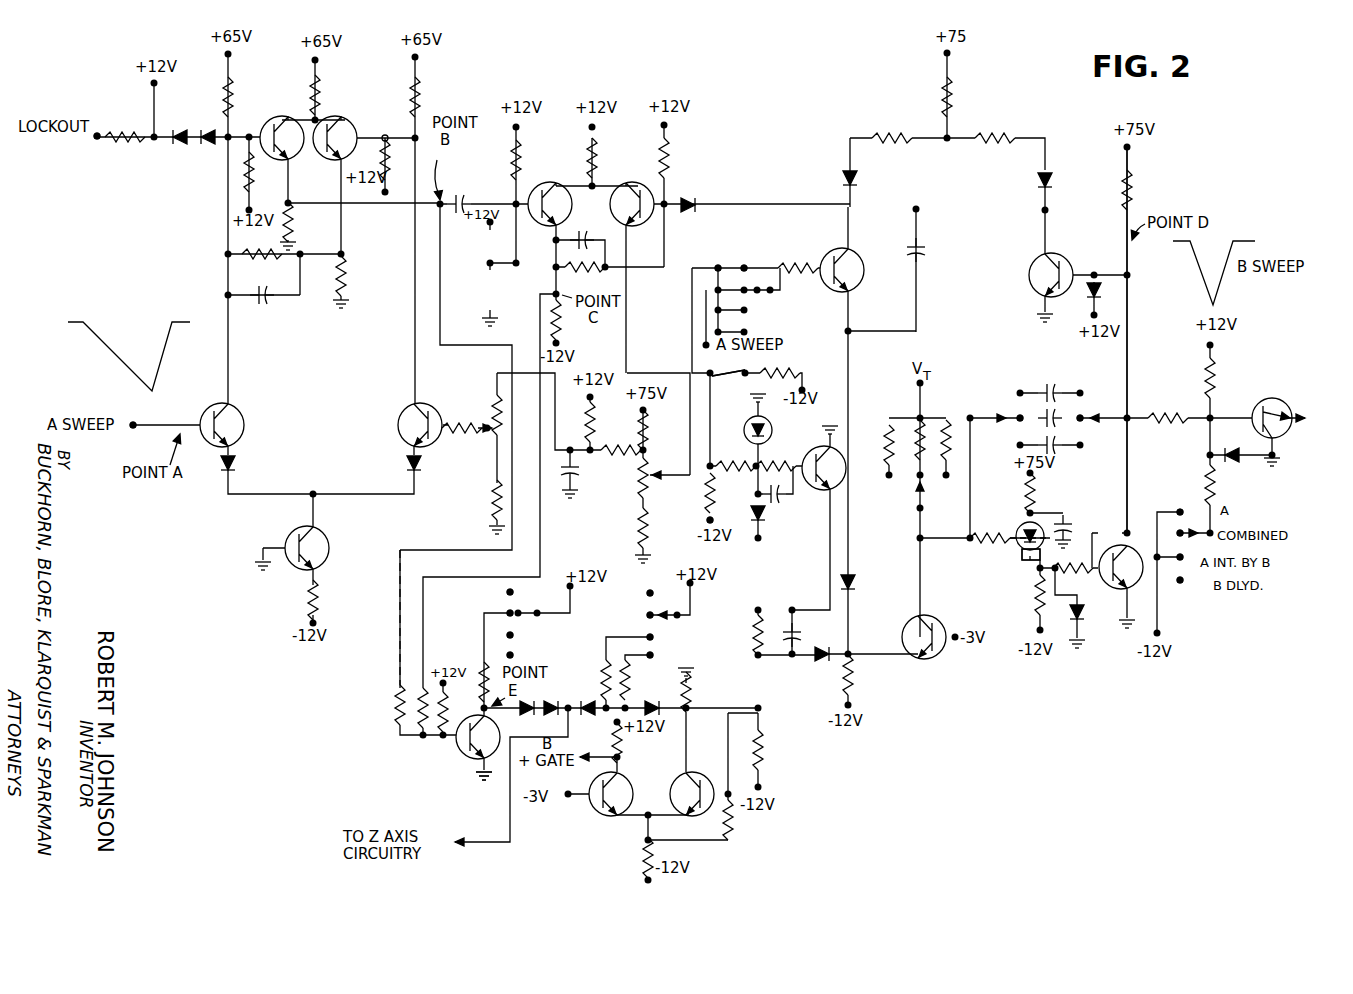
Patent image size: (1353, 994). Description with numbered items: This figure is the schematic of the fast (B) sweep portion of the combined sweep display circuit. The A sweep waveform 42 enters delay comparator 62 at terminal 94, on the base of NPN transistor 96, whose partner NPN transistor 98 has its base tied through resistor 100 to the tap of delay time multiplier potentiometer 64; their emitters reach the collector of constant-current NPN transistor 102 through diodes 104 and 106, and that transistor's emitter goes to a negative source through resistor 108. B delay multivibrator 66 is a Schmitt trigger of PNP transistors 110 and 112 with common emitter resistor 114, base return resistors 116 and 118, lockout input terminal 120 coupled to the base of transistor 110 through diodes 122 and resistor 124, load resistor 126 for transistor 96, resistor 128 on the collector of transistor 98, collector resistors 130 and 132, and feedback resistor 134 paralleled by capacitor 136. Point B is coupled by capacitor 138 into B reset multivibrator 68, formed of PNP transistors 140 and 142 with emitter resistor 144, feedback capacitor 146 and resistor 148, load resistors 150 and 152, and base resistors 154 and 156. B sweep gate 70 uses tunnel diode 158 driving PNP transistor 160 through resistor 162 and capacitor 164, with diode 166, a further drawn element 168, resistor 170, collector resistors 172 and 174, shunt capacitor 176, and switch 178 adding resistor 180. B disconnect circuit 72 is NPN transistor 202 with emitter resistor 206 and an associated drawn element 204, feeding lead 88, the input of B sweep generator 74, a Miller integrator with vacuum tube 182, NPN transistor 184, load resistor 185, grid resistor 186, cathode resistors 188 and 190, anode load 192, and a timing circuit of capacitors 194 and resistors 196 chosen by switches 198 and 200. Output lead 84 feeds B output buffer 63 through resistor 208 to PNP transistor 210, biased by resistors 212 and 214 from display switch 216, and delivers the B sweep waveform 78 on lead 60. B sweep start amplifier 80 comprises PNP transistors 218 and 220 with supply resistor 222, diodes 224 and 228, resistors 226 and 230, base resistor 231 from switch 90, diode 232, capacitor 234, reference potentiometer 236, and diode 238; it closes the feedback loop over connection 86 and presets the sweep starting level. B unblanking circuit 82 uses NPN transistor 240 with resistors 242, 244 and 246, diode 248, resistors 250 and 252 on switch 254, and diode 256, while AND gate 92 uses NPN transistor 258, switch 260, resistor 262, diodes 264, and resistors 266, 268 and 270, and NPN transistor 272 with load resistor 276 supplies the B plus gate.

The A sweep waveform 42 is at (109, 338).
The output lead 60 is at (1300, 428).
The delay comparator 62 is at (318, 464).
The B output buffer 63 is at (1290, 391).
The delay time multiplier potentiometer 64 is at (488, 450).
The B delay multivibrator 66 is at (324, 182).
The B reset multivibrator 68 is at (606, 206).
The B sweep gate 70 is at (811, 436).
The B disconnect circuit 72 is at (890, 620).
The B sweep generator 74 is at (1116, 513).
The B sweep waveform 78 is at (1205, 248).
The B sweep start amplifier 80 is at (962, 310).
The B unblanking circuit 82 is at (663, 801).
The output lead 84 is at (1130, 344).
The connection 86 is at (851, 405).
The lead 88 is at (923, 585).
The switch 90 is at (757, 283).
The AND gate 92 is at (437, 771).
The terminal 94 is at (131, 428).
The NPN transistor 96 is at (236, 413).
The NPN transistor 98 is at (408, 410).
The resistor 100 is at (462, 420).
The NPN transistor 102 is at (329, 549).
The diode 104 is at (236, 463).
The diode 106 is at (405, 464).
The resistor 108 is at (318, 600).
The PNP transistor 110 is at (278, 112).
The PNP transistor 112 is at (355, 125).
The resistor 114 is at (320, 93).
The resistor 116 is at (254, 175).
The resistor 118 is at (380, 163).
The lockout input terminal 120 is at (95, 140).
The diodes 122 is at (210, 145).
The resistor 124 is at (127, 144).
The load resistor 126 is at (232, 95).
The resistor 128 is at (420, 95).
The resistor 130 is at (294, 222).
The resistor 132 is at (347, 278).
The resistor 134 is at (262, 259).
The capacitor 136 is at (263, 306).
The capacitor 138 is at (462, 195).
The PNP transistor 140 is at (550, 183).
The PNP transistor 142 is at (636, 183).
The resistor 144 is at (588, 162).
The capacitor 146 is at (580, 233).
The resistor 148 is at (588, 271).
The load resistor 150 is at (562, 320).
The load resistor 152 is at (732, 516).
The resistor 154 is at (511, 160).
The resistor 156 is at (672, 168).
The tunnel diode 158 is at (746, 423).
The PNP transistor 160 is at (818, 490).
The resistor 162 is at (782, 455).
The capacitor 164 is at (781, 503).
The diode 166 is at (714, 488).
The diode 168 is at (760, 541).
The resistor 170 is at (733, 461).
The resistor 172 is at (752, 645).
The resistor 174 is at (764, 745).
The capacitor 176 is at (799, 636).
The switch 178 is at (728, 362).
The resistor 180 is at (785, 366).
The vacuum tube 182 is at (1021, 556).
The NPN transistor 184 is at (1114, 590).
The load resistor 185 is at (1121, 190).
The resistor 186 is at (1000, 530).
The resistor 188 is at (1035, 601).
The resistor 190 is at (1079, 581).
The load resistor 192 is at (1040, 496).
The capacitors 194 is at (1040, 430).
The resistors 196 is at (885, 478).
The switch 198 is at (915, 505).
The switch 200 is at (1000, 415).
The NPN transistor 202 is at (930, 657).
The diode 204 is at (818, 660).
The resistor 206 is at (853, 688).
The resistor 208 is at (1168, 425).
The PNP transistor 210 is at (1265, 410).
The resistor 212 is at (1220, 372).
The resistor 214 is at (1202, 483).
The display switch 216 is at (1190, 586).
The PNP transistor 218 is at (858, 262).
The PNP transistor 220 is at (1056, 262).
The common supply resistor 222 is at (953, 92).
The diode 224 is at (842, 180).
The resistor 226 is at (905, 130).
The diode 228 is at (1036, 180).
The resistor 230 is at (997, 132).
The resistor 231 is at (805, 262).
The diode 232 is at (854, 583).
The capacitor 234 is at (925, 250).
The potentiometer 236 is at (640, 474).
The diode 238 is at (696, 196).
The NPN transistor 240 is at (705, 770).
The resistor 242 is at (694, 702).
The resistor 244 is at (641, 858).
The resistor 246 is at (736, 826).
The diode 248 is at (658, 696).
The resistor 250 is at (630, 672).
The resistor 252 is at (600, 672).
The switch 254 is at (676, 598).
The diode 256 is at (583, 703).
The NPN transistor 258 is at (466, 758).
The switch 260 is at (522, 594).
The resistor 262 is at (481, 665).
The diodes 264 is at (528, 715).
The resistor 266 is at (442, 688).
The resistor 268 is at (395, 712).
The resistor 270 is at (418, 692).
The NPN transistor 272 is at (592, 812).
The load resistor 276 is at (622, 748).